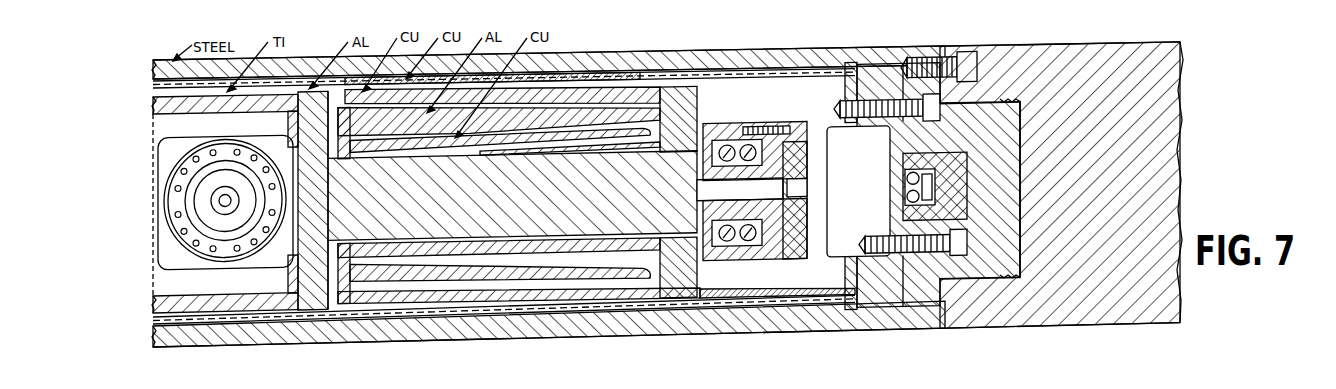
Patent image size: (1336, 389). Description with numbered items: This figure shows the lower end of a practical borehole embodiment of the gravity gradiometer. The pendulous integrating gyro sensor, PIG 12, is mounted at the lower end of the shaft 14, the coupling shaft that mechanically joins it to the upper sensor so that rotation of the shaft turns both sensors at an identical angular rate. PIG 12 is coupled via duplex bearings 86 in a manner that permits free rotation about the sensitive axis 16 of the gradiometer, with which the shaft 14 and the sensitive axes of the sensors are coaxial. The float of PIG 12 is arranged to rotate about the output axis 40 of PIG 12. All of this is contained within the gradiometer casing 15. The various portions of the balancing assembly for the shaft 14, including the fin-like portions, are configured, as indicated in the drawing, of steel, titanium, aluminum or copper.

The PIG 12 is at (178, 243).
The shaft 14 is at (261, 310).
The gradiometer casing 15 is at (462, 342).
The sensitive axis 16 is at (152, 203).
The output axis 40 is at (224, 197).
The duplex bearings 86 is at (730, 138).